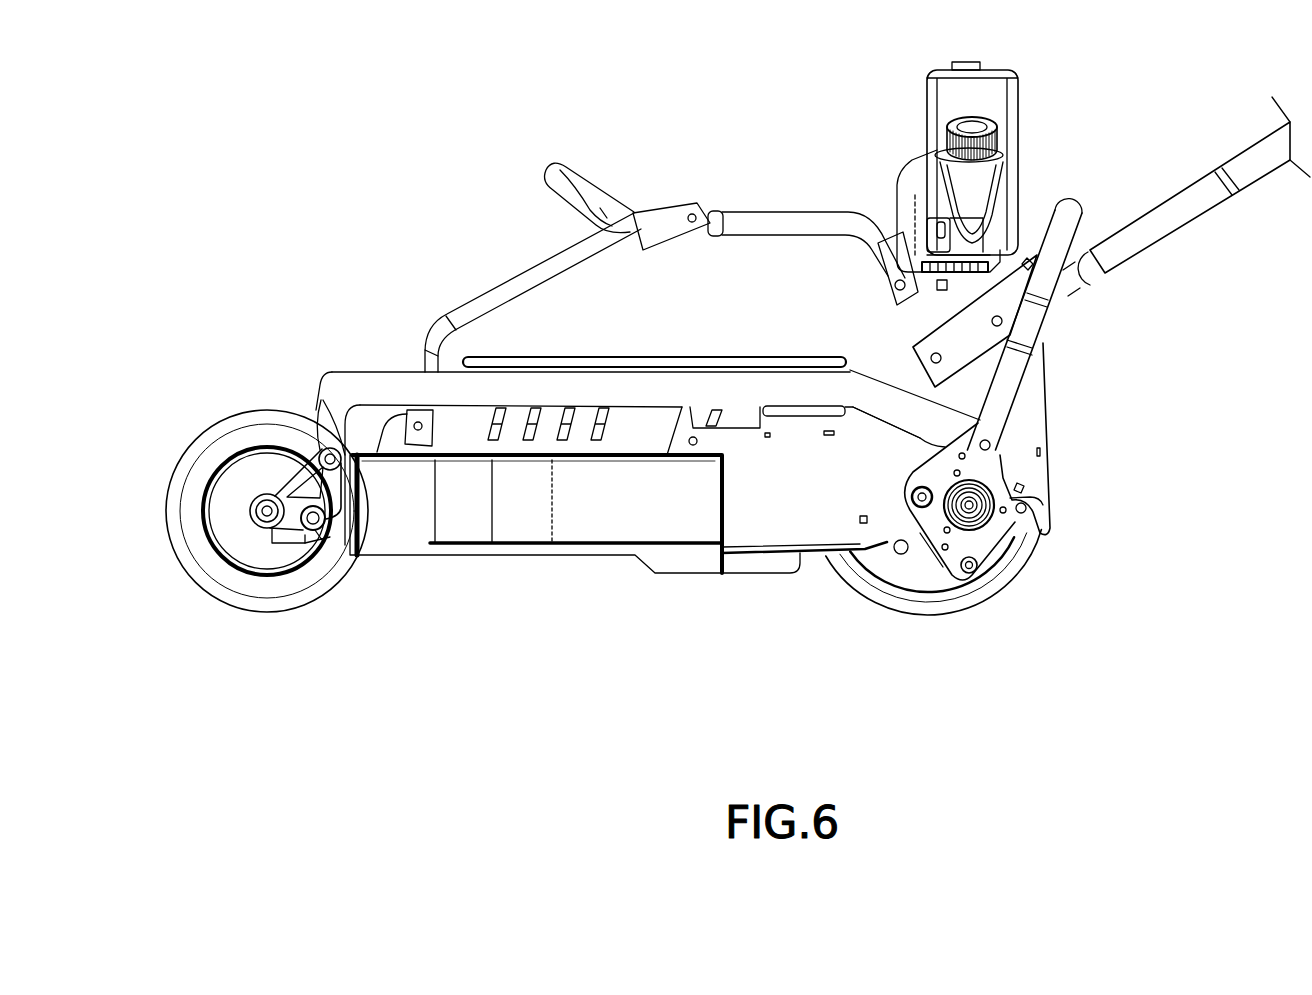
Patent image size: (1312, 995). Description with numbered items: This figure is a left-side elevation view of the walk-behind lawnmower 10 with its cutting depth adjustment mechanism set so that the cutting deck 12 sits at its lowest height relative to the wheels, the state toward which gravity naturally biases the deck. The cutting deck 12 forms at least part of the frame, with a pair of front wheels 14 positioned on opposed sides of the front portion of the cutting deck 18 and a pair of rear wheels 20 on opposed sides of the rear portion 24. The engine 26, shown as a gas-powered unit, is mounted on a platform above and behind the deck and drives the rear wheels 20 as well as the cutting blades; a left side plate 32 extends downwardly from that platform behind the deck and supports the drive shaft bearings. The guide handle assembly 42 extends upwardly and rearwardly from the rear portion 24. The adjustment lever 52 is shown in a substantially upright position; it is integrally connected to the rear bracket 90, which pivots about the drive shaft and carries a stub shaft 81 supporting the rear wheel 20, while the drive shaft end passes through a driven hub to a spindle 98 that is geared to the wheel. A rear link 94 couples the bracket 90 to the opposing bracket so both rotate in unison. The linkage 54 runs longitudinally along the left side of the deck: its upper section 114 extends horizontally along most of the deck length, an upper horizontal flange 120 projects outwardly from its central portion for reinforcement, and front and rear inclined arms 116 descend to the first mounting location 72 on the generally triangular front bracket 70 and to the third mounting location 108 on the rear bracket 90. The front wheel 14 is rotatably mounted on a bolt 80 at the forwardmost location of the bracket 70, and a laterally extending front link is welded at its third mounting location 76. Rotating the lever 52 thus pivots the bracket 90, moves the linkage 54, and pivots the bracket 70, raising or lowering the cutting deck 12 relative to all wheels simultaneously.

The walk-behind lawnmower 10 is at (403, 208).
The cutting deck 12 is at (576, 500).
The front wheels 14 is at (236, 600).
The front portion of the cutting deck 18 is at (138, 408).
The rear wheels 20 is at (997, 585).
The rear portion 24 is at (1086, 420).
The engine 26 is at (975, 195).
The left side plate 32 is at (825, 534).
The guide handle assembly 42 is at (1230, 152).
The adjustment lever 52 is at (1028, 323).
The linkage 54 is at (352, 392).
The bracket 70 is at (314, 530).
The first mounting location 72 is at (321, 398).
The third mounting location 76 is at (348, 548).
The bolt 80 is at (262, 516).
The stub shaft 81 is at (920, 507).
The bracket 90 is at (1000, 487).
The rear link 94 is at (975, 576).
The spindle 98 is at (958, 580).
The third mounting location 108 is at (990, 444).
The upper section 114 is at (665, 385).
The inclined arms 116 is at (348, 428).
The upper horizontal flange 120 is at (760, 362).